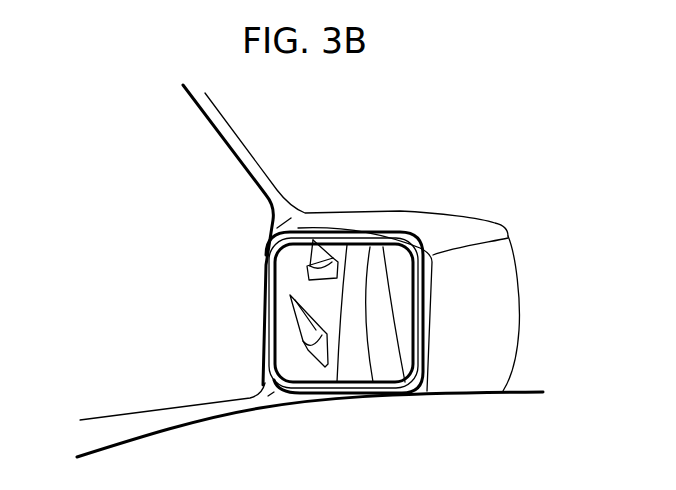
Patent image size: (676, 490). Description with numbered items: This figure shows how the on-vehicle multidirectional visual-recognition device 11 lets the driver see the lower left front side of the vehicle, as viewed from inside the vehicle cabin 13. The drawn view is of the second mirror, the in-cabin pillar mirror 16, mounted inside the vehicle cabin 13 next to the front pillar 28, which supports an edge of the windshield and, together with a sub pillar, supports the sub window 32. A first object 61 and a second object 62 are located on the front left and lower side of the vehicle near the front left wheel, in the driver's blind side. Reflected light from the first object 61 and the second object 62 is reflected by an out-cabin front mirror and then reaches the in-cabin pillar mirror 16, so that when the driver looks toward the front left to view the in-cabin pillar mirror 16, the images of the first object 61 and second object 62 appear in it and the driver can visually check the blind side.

The on-vehicle multidirectional visual-recognition device 11 is at (141, 211).
The vehicle cabin 13 is at (453, 472).
The second mirror (in-cabin pillar mirror) 16 is at (402, 272).
The front pillar 28 is at (215, 114).
The sub window 32 is at (200, 198).
The first object 61 is at (312, 367).
The second object 62 is at (334, 252).